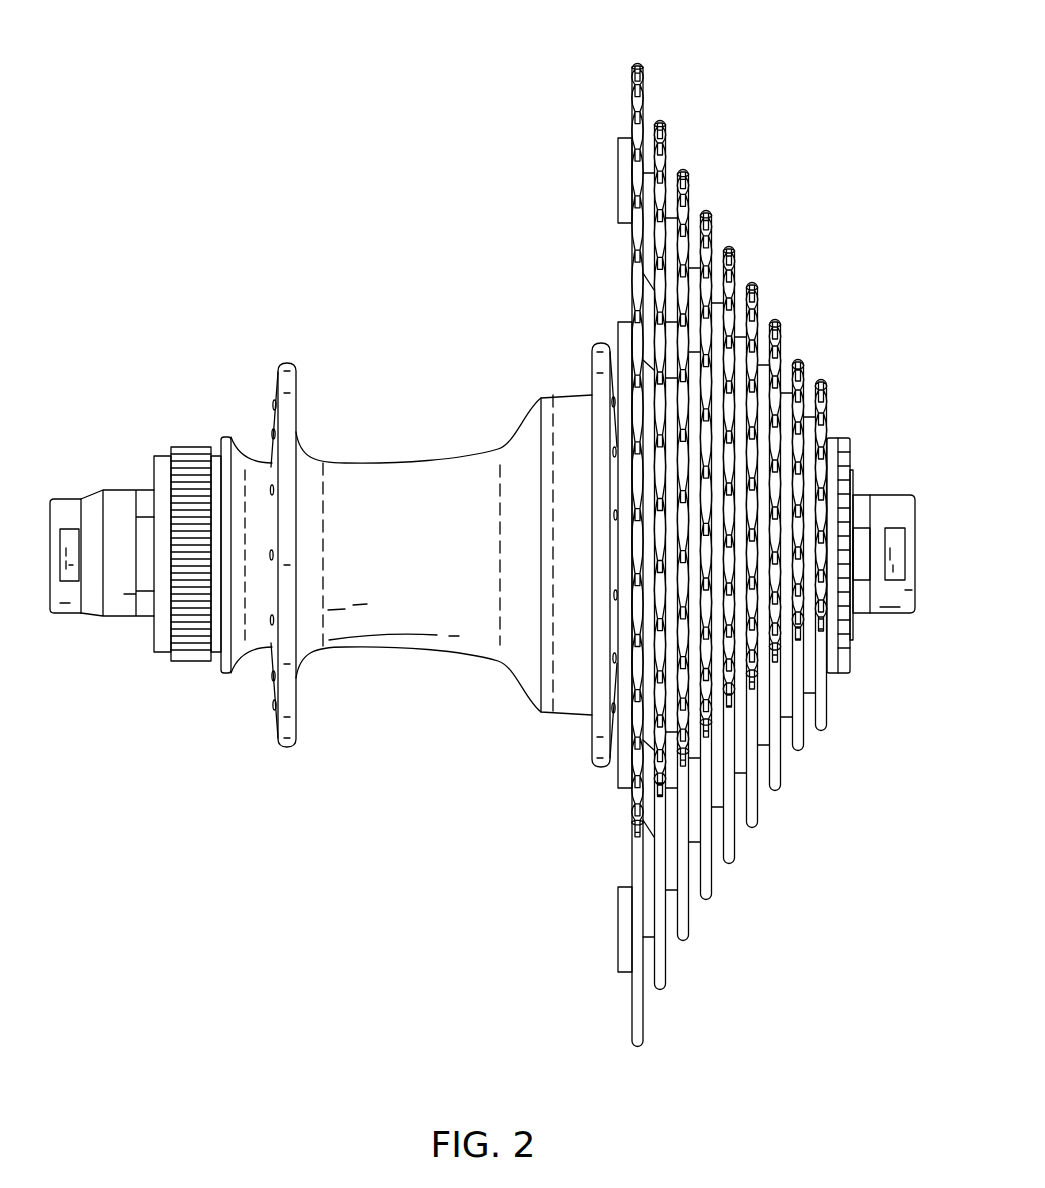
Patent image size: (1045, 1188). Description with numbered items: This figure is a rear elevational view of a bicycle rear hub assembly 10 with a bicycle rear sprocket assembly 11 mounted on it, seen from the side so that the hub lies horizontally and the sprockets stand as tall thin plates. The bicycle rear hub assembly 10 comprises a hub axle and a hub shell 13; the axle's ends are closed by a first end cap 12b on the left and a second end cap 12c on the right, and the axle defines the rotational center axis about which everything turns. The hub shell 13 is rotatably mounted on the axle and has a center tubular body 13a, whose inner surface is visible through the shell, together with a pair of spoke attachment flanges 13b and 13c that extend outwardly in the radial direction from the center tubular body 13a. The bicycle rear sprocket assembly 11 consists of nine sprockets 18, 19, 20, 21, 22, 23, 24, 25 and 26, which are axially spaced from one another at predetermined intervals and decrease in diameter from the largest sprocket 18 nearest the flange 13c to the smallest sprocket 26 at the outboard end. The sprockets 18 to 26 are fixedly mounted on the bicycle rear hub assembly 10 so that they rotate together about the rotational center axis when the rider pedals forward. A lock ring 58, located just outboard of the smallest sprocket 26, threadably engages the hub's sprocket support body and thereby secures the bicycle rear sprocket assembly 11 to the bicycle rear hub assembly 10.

The bicycle rear hub assembly 10 is at (391, 370).
The bicycle rear sprocket assembly 11 is at (831, 129).
The first end cap 12b is at (66, 615).
The second end cap 12c is at (893, 615).
The hub shell 13 is at (373, 652).
The center tubular body 13a is at (437, 646).
The spoke attachment flange 13b is at (290, 750).
The spoke attachment flange 13c is at (600, 769).
The sprocket 18 is at (644, 63).
The sprocket 19 is at (666, 119).
The sprocket 20 is at (689, 169).
The sprocket 21 is at (712, 211).
The sprocket 22 is at (735, 246).
The sprocket 23 is at (758, 282).
The sprocket 24 is at (781, 319).
The sprocket 25 is at (804, 359).
The sprocket 26 is at (827, 379).
The lock ring 58 is at (852, 452).